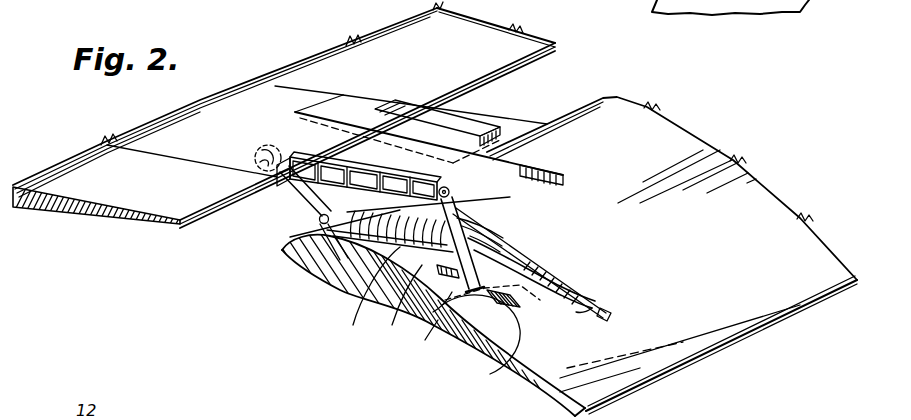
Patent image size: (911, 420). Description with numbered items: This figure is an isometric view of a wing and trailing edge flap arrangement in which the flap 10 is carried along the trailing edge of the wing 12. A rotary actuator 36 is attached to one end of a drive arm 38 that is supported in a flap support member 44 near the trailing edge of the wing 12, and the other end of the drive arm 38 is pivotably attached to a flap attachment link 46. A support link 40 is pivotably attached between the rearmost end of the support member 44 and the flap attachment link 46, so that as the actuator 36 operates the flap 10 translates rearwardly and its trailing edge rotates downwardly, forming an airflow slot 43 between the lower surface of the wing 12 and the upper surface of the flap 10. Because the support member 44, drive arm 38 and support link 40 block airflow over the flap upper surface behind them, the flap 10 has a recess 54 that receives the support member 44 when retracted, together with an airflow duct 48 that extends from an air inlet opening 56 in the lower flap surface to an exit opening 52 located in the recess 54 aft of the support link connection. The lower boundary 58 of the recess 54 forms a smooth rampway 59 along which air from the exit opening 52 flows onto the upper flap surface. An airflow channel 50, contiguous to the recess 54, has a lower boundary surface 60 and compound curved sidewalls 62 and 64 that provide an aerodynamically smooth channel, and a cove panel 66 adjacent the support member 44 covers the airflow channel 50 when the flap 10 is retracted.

The inboard flap 10 is at (673, 155).
The wing 12 is at (312, 44).
The rotary actuator 36 is at (262, 147).
The drive arm 38 is at (292, 192).
The support link 40 is at (530, 270).
The airflow slot 43 is at (546, 86).
The flap support member 44 is at (304, 226).
The flap attachment link 46 is at (314, 257).
The airflow duct 48 is at (453, 348).
The airflow channel 50 is at (532, 189).
The exit opening 52 is at (500, 355).
The recess 54 is at (353, 324).
The air inlet opening 56 is at (425, 340).
The lower boundary 58 is at (392, 325).
The rampway 59 is at (598, 310).
The lower boundary surface 60 is at (420, 195).
The sidewall 62 is at (458, 192).
The sidewall 64 is at (556, 258).
The cove panel 66 is at (467, 130).